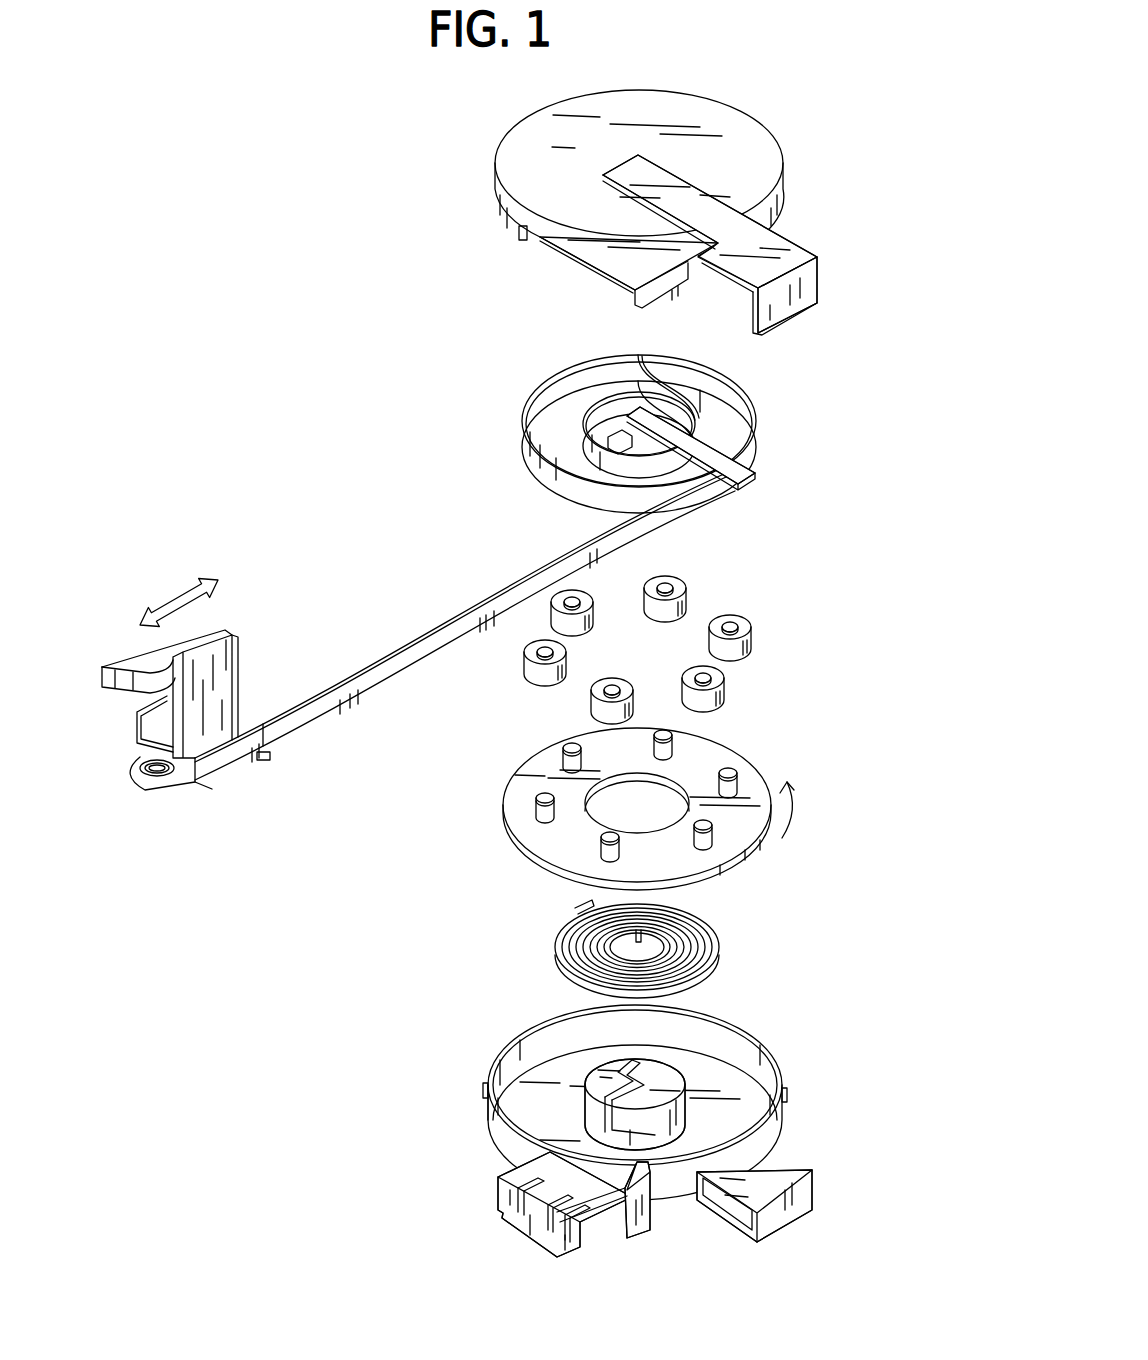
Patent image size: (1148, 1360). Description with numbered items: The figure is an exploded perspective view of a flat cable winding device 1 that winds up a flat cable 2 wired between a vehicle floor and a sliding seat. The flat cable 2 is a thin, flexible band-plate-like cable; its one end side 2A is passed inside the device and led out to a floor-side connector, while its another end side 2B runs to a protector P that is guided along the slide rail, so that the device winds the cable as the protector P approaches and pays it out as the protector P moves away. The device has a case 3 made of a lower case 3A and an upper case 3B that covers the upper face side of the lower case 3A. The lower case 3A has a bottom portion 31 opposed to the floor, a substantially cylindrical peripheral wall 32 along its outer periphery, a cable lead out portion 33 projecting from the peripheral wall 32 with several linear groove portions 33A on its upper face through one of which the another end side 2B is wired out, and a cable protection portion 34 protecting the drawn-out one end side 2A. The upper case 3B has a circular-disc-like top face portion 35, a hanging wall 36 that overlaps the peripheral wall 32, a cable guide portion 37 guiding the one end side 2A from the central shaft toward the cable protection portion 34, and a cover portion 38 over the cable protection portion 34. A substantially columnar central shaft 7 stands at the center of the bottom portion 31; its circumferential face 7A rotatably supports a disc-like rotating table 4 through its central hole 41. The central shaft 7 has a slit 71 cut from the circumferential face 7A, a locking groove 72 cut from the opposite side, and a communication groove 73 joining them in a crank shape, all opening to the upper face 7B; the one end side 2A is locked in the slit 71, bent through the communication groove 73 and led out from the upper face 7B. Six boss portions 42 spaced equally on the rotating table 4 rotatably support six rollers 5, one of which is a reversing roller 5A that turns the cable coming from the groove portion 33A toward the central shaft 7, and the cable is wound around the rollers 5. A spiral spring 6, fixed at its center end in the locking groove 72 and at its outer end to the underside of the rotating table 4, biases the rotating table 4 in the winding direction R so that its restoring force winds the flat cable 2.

The flat cable winding device 1 is at (395, 289).
The flat cable 2 is at (483, 612).
The one end side of the flat cable 2A is at (745, 480).
The another end side of the flat cable 2B is at (300, 745).
The case 3 is at (472, 1043).
The lower case 3A is at (490, 1125).
The upper case 3B is at (505, 212).
The rotating table 4 is at (757, 770).
The rollers 5 is at (595, 593).
The reversing roller 5A is at (677, 578).
The spiral spring 6 is at (713, 935).
The central shaft 7 is at (683, 1082).
The circumferential face of the central shaft 7A is at (670, 1118).
The upper face of the central shaft 7B is at (657, 1072).
The bottom portion 31 is at (560, 1075).
The peripheral wall 32 is at (565, 1012).
The cable lead out portion 33 is at (535, 1225).
The groove portions 33A is at (530, 1170).
The cable protection portion 34 is at (788, 1210).
The top face portion 35 is at (738, 140).
The hanging wall 36 is at (662, 290).
The cable guide portion 37 is at (697, 198).
The cover portion 38 is at (795, 255).
The hole 41 is at (643, 828).
The boss portions 42 is at (582, 752).
The slit 71 is at (607, 1112).
The locking groove 72 is at (622, 1060).
The communication groove 73 is at (642, 1060).
The protector P is at (217, 613).
The winding direction R is at (795, 812).